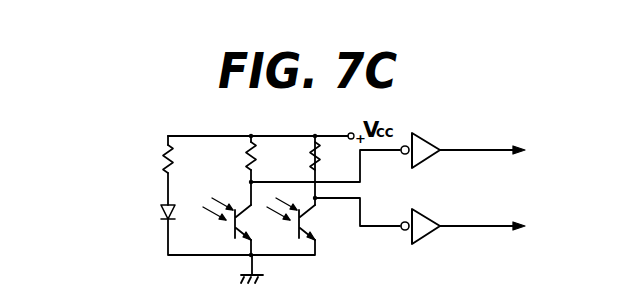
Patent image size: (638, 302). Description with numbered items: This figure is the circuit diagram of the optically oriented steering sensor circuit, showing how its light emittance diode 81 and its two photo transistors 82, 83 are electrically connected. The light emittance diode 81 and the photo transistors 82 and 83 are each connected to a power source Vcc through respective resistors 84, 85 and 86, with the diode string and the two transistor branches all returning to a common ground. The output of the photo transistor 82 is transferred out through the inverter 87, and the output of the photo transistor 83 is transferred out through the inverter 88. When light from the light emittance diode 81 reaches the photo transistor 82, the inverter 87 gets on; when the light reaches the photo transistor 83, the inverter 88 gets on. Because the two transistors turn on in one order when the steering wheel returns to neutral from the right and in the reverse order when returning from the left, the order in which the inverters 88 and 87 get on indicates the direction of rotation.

The light emittance diode 81 is at (160, 212).
The photo transistor 82 is at (300, 236).
The photo transistor 83 is at (231, 233).
The resistor 84 is at (164, 156).
The resistor 85 is at (313, 156).
The resistor 86 is at (249, 157).
The inverter 87 is at (425, 221).
The inverter 88 is at (425, 146).